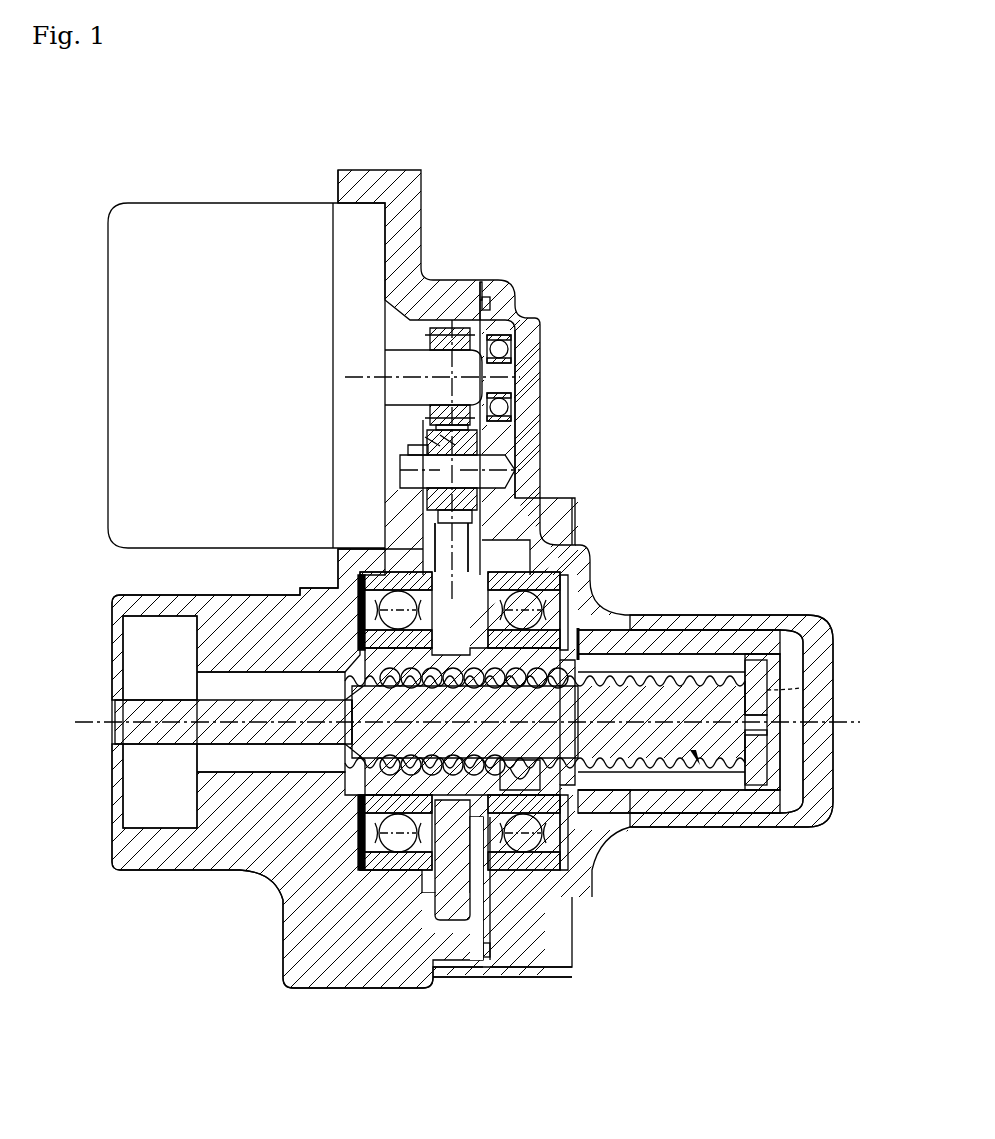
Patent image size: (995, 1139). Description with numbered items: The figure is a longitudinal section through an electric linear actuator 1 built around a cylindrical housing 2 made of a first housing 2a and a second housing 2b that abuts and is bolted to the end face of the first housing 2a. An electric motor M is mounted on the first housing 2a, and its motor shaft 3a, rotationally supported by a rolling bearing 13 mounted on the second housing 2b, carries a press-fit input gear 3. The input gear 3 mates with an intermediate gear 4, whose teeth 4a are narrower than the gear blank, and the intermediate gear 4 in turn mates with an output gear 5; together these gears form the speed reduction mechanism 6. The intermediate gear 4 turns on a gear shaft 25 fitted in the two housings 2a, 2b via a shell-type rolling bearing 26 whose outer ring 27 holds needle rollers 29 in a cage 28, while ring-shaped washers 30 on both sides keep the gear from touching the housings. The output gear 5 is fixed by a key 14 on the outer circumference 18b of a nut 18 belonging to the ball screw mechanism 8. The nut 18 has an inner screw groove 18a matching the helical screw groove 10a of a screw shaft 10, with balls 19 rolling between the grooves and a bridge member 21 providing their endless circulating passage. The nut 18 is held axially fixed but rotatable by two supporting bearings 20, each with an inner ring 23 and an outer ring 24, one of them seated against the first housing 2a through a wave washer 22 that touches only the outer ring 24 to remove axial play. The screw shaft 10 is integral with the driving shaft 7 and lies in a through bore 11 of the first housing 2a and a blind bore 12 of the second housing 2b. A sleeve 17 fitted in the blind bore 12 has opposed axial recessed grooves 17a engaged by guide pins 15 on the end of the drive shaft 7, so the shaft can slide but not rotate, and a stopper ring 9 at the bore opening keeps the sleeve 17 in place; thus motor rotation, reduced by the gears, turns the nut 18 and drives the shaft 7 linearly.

The electric actuator 1 is at (684, 478).
The cylindrical housing 2 is at (520, 1045).
The first housing 2a is at (458, 977).
The second housing 2b is at (512, 977).
The input gear 3 is at (455, 330).
The motor shaft 3a is at (395, 366).
The intermediate gear 4 is at (508, 470).
The teeth 4a is at (408, 540).
The output gear 5 is at (578, 510).
The speed reduction mechanism 6 is at (530, 408).
The driving shaft 7 is at (248, 705).
The ball screw mechanism 8 is at (632, 828).
The stopper ring 9 is at (592, 626).
The screw shaft 10 is at (684, 815).
The helical screw groove 10a is at (633, 745).
The through bore 11 is at (196, 680).
The blind bore 12 is at (642, 626).
The rolling bearing 13 is at (512, 348).
The key 14 is at (488, 578).
The guide pins 15 is at (800, 690).
The sleeve 17 is at (768, 625).
The recessed grooves 17a is at (691, 645).
The nut 18 is at (358, 652).
The screw groove 18a is at (430, 762).
The outer circumference 18b is at (398, 681).
The balls 19 is at (540, 681).
The supporting bearings 20 is at (566, 580).
The bridge member 21 is at (512, 770).
The washer 22 is at (352, 578).
The inner ring 23 is at (358, 620).
The outer ring 24 is at (355, 592).
The gear shaft 25 is at (400, 470).
The rolling bearing 26 is at (428, 450).
The outer ring 27 is at (425, 437).
The cage 28 is at (451, 389).
The needle rollers 29 is at (478, 447).
The ring-shaped washers 30 is at (480, 440).
The electric motor M is at (224, 215).